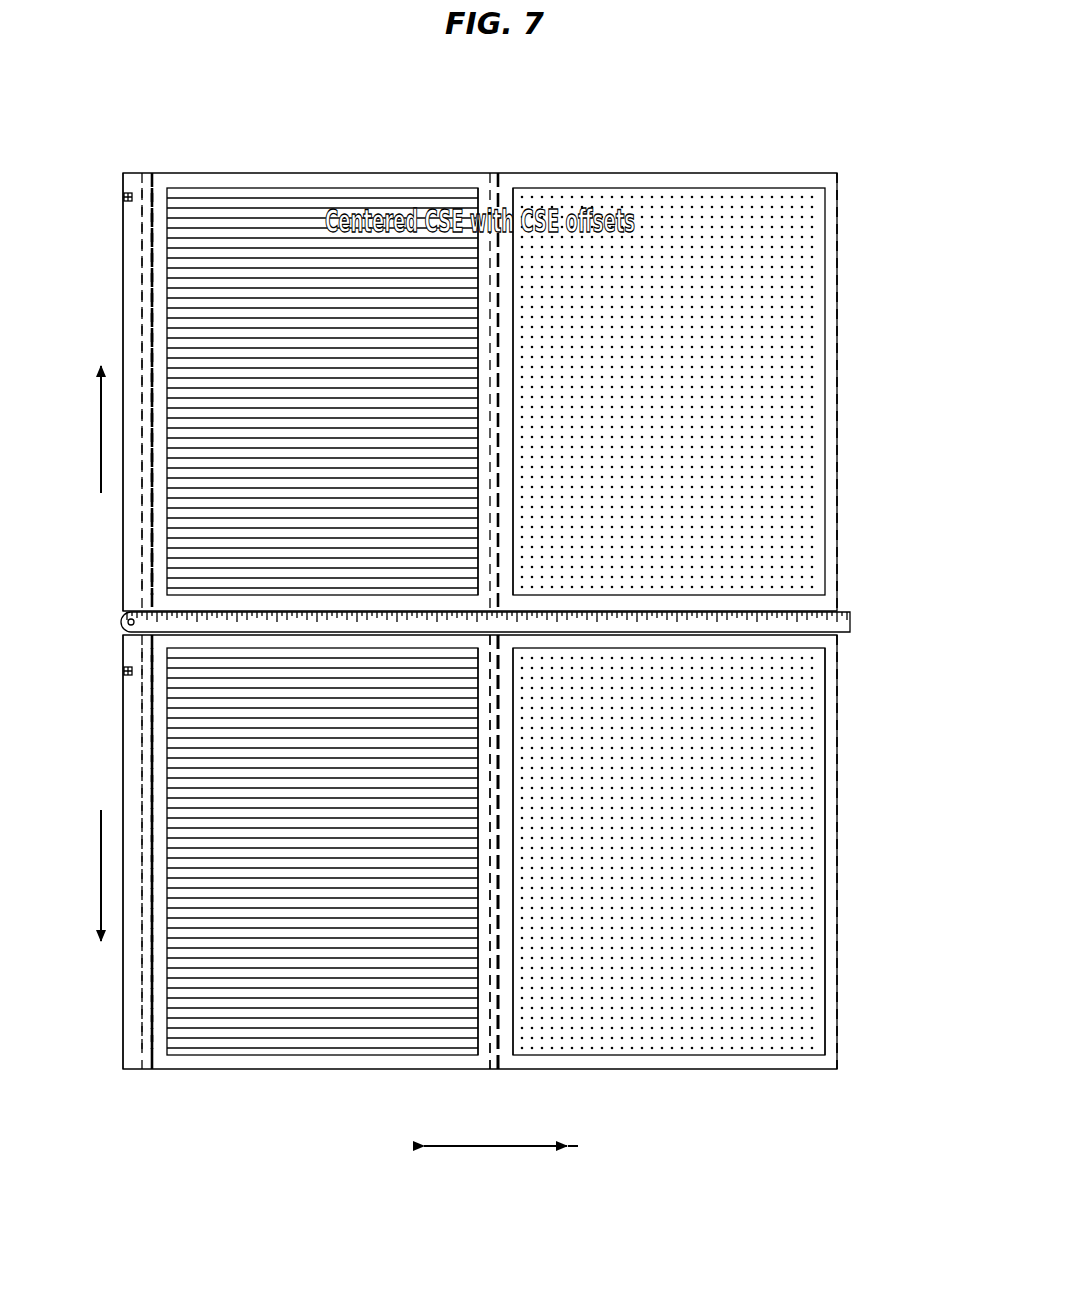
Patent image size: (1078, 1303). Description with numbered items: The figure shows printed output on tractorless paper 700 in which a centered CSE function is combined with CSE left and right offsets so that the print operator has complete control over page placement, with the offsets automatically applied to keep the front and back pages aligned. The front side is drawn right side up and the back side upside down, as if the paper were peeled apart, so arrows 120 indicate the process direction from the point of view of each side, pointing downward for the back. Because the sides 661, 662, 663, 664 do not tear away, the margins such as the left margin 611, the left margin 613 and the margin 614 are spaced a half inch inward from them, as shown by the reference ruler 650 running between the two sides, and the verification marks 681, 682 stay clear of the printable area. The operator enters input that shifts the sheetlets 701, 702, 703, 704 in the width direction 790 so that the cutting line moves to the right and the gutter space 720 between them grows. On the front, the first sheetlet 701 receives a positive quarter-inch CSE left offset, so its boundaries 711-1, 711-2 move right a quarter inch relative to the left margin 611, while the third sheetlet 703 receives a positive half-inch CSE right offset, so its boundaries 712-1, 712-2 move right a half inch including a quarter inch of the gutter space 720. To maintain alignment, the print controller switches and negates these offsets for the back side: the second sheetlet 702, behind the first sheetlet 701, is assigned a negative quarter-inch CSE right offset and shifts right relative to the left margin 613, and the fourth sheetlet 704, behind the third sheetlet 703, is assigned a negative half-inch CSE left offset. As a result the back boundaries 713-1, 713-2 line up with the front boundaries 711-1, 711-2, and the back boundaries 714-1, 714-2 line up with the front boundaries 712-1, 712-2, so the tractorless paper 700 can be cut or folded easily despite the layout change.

The tractorless paper 700 is at (653, 95).
The first sheetlet 701 is at (268, 232).
The second sheetlet 702 is at (237, 1012).
The third sheetlet 703 is at (757, 226).
The fourth sheetlet 704 is at (753, 1012).
The boundary of the first sheetlet 711-1 is at (166, 204).
The boundary of the first sheetlet 711-2 is at (475, 188).
The boundary of the third sheetlet 712-1 is at (516, 188).
The boundary of the third sheetlet 712-2 is at (850, 375).
The boundary of the second sheetlet 713-1 is at (142, 784).
The boundary of the second sheetlet 713-2 is at (473, 1040).
The boundary of the fourth sheetlet 714-1 is at (518, 1040).
The boundary of the fourth sheetlet 714-2 is at (850, 832).
The verification mark 681 is at (123, 198).
The verification mark 682 is at (123, 672).
The side 661 is at (123, 251).
The side 662 is at (838, 249).
The side 663 is at (123, 717).
The side 664 is at (838, 730).
The left margin 611 is at (132, 318).
The left margin 613 is at (132, 1010).
The margin 614 is at (838, 940).
The reference ruler 650 is at (862, 623).
The arrow 120 is at (101, 440).
The gutter space 720 is at (494, 1082).
The width direction 790 is at (487, 1156).